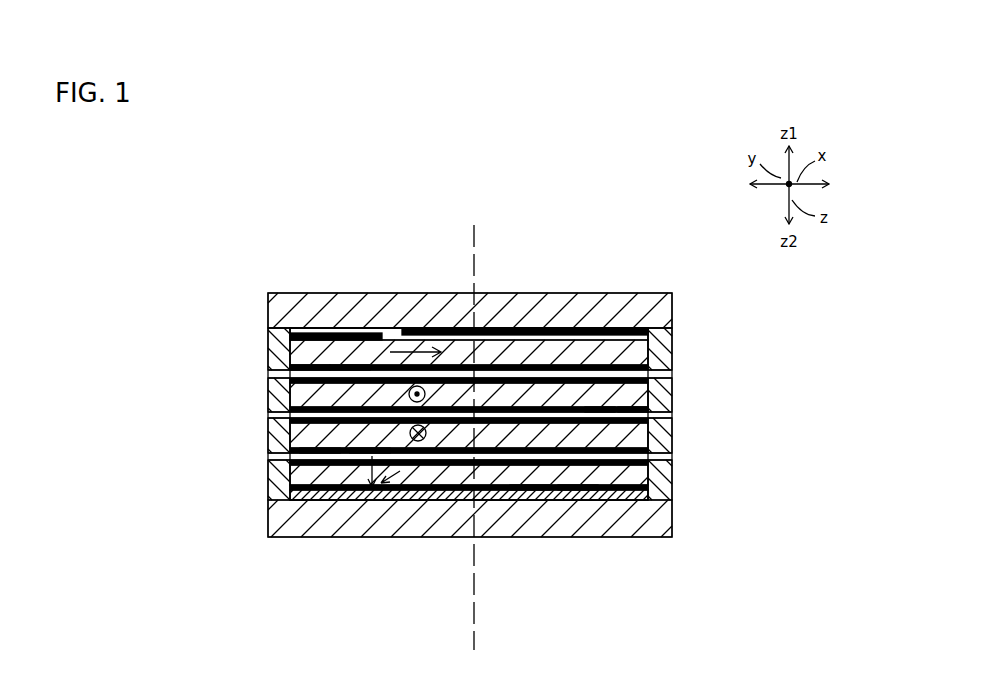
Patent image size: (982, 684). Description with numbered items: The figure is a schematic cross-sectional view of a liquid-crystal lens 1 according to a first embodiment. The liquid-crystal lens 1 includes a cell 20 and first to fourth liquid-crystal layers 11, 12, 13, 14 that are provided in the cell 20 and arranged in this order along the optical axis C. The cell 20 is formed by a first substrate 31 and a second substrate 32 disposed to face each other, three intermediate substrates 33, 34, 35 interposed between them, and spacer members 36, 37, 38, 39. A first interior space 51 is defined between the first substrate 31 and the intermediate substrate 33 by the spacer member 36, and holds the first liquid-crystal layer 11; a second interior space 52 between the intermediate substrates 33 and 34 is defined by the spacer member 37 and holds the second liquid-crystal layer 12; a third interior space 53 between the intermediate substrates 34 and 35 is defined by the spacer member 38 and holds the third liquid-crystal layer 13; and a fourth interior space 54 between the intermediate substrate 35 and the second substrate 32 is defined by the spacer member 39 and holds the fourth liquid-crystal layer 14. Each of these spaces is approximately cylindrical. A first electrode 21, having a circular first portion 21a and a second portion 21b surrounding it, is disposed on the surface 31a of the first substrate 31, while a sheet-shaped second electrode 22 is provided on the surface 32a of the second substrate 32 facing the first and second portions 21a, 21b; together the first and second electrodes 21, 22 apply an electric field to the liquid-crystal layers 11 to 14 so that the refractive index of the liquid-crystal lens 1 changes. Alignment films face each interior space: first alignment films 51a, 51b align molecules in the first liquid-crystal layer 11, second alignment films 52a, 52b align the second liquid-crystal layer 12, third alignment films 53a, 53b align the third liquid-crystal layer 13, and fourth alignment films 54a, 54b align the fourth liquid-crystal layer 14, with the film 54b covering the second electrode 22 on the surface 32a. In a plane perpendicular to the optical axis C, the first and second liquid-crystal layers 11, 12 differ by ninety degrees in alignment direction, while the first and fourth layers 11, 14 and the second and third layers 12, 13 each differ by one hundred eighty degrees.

The liquid-crystal lens 1 is at (630, 246).
The first liquid-crystal layer 11 is at (674, 344).
The second liquid-crystal layer 12 is at (674, 387).
The third liquid-crystal layer 13 is at (674, 431).
The fourth liquid-crystal layer 14 is at (674, 478).
The cell 20 is at (497, 291).
The first electrode 21 is at (447, 232).
The first portion 21a is at (431, 328).
The second portion 21b is at (338, 334).
The second electrode 22 is at (590, 498).
The first substrate 31 is at (682, 306).
The surface of the first substrate 31a is at (554, 328).
The second substrate 32 is at (682, 520).
The surface of the second substrate 32a is at (392, 500).
The intermediate substrate 33 is at (674, 374).
The intermediate substrate 34 is at (674, 415).
The intermediate substrate 35 is at (674, 456).
The spacer member 36 is at (266, 345).
The spacer member 37 is at (266, 390).
The spacer member 38 is at (266, 433).
The spacer member 39 is at (266, 472).
The first interior space 51 is at (267, 371).
The first alignment film 51a is at (328, 365).
The first alignment film 51b is at (347, 363).
The second interior space 52 is at (267, 411).
The second alignment film 52a is at (600, 407).
The second alignment film 52b is at (640, 407).
The third interior space 53 is at (267, 451).
The third alignment film 53a is at (322, 453).
The third alignment film 53b is at (372, 453).
The fourth interior space 54 is at (267, 489).
The fourth alignment film 54a is at (530, 490).
The fourth alignment film 54b is at (578, 490).
The optical axis C is at (477, 626).